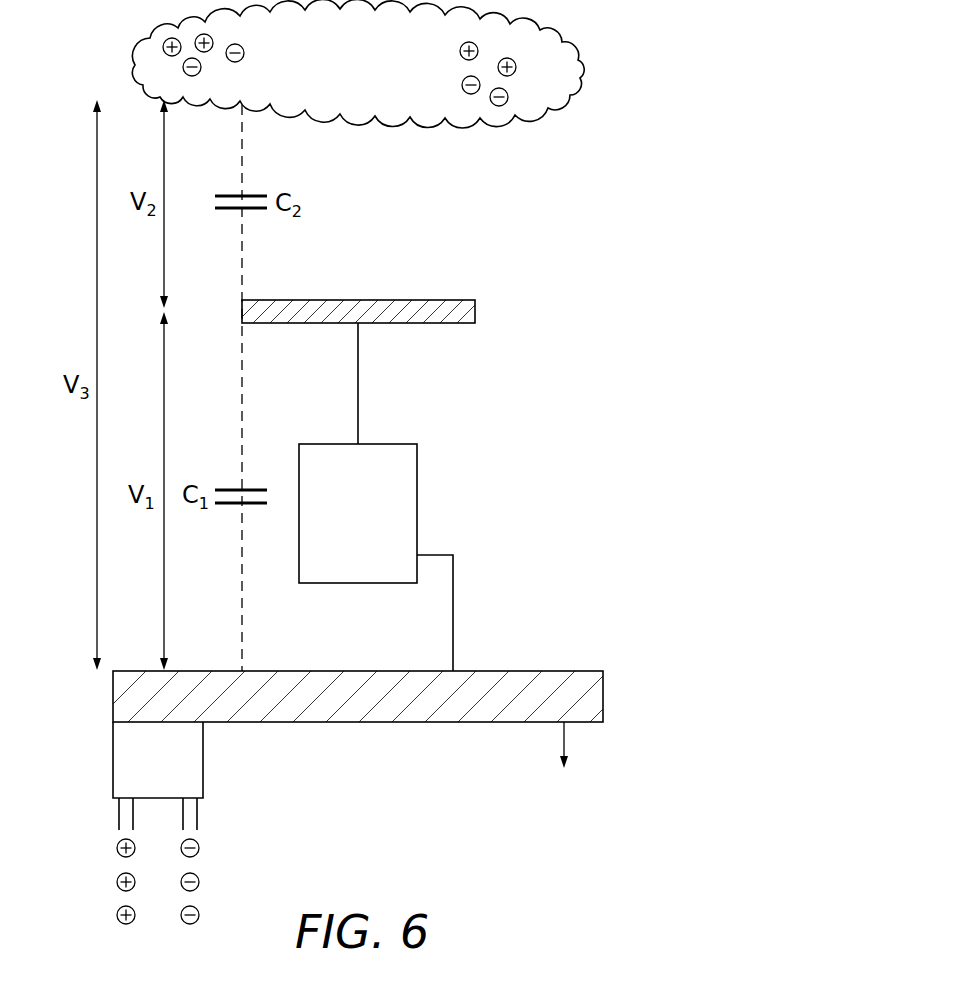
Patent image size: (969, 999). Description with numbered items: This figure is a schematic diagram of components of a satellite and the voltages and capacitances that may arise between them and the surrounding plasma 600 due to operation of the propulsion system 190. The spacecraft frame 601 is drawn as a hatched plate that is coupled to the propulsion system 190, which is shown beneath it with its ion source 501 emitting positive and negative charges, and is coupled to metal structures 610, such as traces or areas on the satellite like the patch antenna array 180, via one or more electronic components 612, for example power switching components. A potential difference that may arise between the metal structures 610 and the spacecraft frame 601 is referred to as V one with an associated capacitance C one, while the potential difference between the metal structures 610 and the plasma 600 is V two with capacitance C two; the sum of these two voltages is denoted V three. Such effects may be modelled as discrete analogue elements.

The surrounding plasma 600 is at (580, 70).
The antenna array 180 is at (268, 305).
The metal structures 610 is at (385, 289).
The electronic components 612 is at (417, 452).
The spacecraft frame 601 is at (603, 682).
The propulsion system 190 is at (113, 760).
The ion source 501 is at (119, 818).